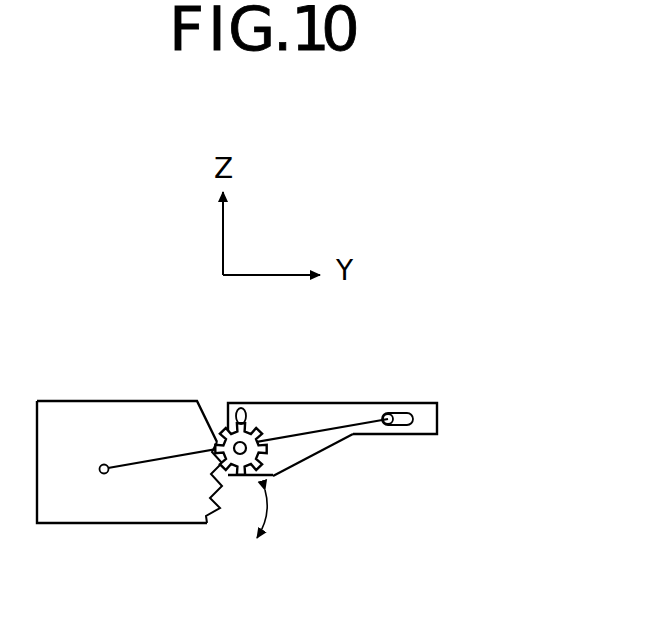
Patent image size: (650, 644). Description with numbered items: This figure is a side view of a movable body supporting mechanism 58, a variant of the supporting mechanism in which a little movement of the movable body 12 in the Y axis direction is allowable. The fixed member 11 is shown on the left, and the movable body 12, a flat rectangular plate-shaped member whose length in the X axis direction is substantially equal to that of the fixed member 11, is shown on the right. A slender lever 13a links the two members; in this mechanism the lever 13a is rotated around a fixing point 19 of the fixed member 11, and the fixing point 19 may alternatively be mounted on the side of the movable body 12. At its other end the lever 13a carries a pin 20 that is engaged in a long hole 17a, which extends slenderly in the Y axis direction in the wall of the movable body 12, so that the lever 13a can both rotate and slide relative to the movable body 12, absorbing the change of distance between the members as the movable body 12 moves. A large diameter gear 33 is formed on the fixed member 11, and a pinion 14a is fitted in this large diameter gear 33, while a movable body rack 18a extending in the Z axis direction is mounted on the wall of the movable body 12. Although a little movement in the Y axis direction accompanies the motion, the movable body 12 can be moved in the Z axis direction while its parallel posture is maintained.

The movable body supporting mechanism 58 is at (165, 308).
The fixed member 11 is at (156, 466).
The movable body 12 is at (384, 427).
The lever 13a is at (274, 457).
The pinion 14a is at (242, 410).
The long hole 17a is at (413, 425).
The movable body rack 18a is at (303, 429).
The fixing point 19 is at (104, 474).
The pin 20 is at (393, 428).
The large diameter gear 33 is at (210, 520).